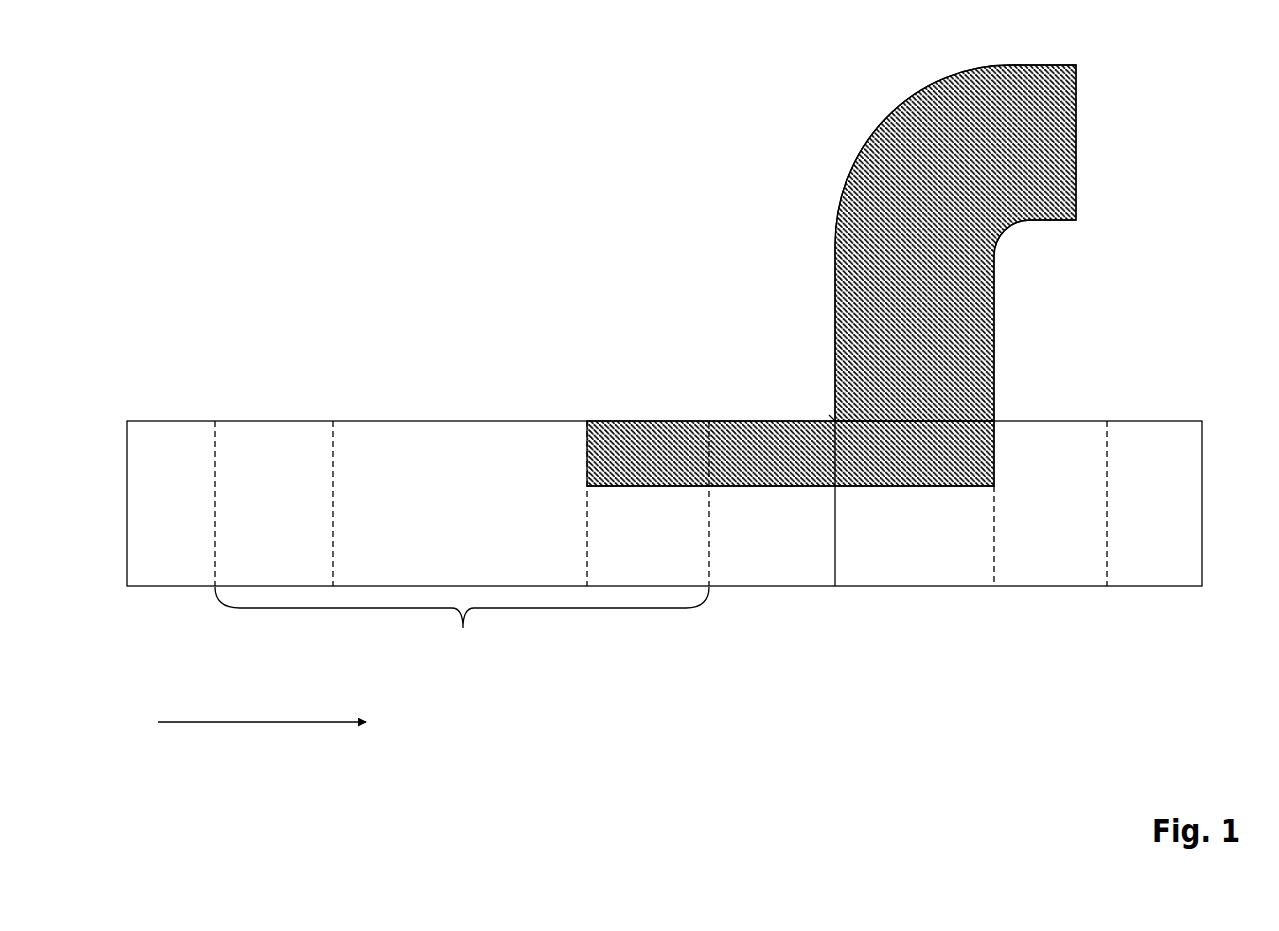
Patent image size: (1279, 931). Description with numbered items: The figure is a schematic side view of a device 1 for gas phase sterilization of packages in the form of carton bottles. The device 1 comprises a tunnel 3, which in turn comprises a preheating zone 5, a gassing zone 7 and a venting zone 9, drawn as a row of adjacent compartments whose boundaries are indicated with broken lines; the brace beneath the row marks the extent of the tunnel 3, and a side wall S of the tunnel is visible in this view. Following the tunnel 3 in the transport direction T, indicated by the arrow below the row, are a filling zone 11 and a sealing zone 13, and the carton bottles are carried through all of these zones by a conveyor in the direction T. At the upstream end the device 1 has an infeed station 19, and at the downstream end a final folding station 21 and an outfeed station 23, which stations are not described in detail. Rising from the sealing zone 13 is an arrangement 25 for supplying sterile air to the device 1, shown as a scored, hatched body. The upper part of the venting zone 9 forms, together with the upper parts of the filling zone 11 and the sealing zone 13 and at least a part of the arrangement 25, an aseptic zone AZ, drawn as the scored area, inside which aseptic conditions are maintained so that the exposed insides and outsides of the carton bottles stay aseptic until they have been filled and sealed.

The device 1 is at (198, 178).
The tunnel 3 is at (462, 624).
The preheating zone 5 is at (267, 535).
The gassing zone 7 is at (453, 535).
The venting zone 9 is at (643, 535).
The filling zone 11 is at (757, 535).
The sealing zone 13 is at (902, 535).
The infeed station 19 is at (156, 535).
The final folding station 21 is at (1037, 535).
The outfeed station 23 is at (1138, 535).
The arrangement for supplying sterile air 25 is at (862, 254).
The side wall S is at (407, 445).
The aseptic zone AZ is at (822, 403).
The transport direction T is at (262, 709).